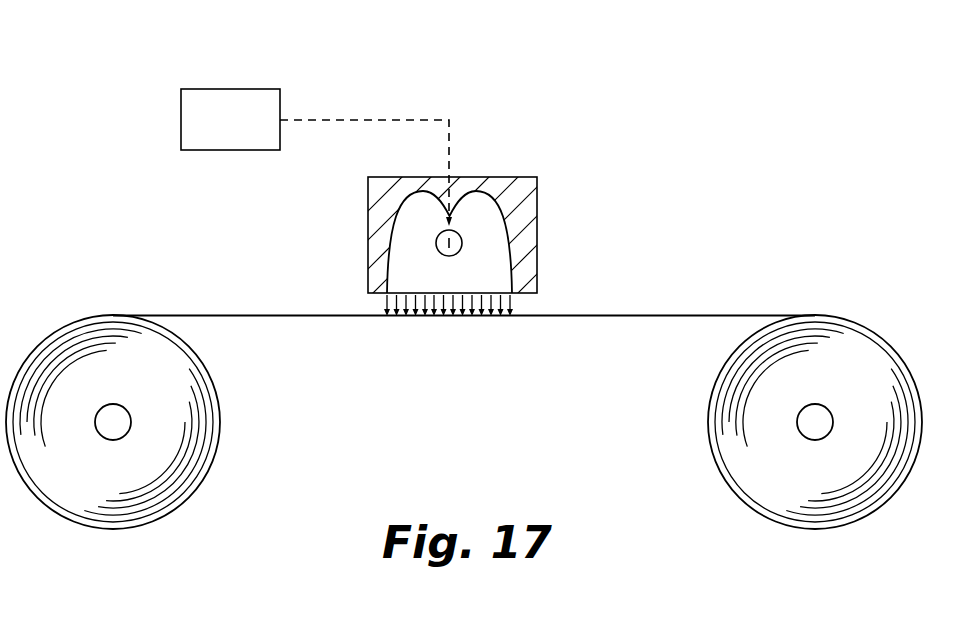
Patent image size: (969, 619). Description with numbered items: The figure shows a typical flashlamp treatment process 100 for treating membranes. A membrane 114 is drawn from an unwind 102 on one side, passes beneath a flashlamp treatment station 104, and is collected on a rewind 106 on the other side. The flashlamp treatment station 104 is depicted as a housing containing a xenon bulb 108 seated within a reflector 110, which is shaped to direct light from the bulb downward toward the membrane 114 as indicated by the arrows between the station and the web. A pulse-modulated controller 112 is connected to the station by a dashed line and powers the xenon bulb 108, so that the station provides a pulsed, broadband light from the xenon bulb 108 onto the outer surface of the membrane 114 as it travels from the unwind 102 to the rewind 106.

The flashlamp treatment process 100 is at (296, 74).
The unwind 102 is at (65, 498).
The flashlamp treatment station 104 is at (503, 182).
The rewind 106 is at (760, 498).
The xenon bulb 108 is at (460, 243).
The reflector 110 is at (510, 270).
The pulse-modulated controller 112 is at (251, 133).
The membrane 114 is at (238, 313).